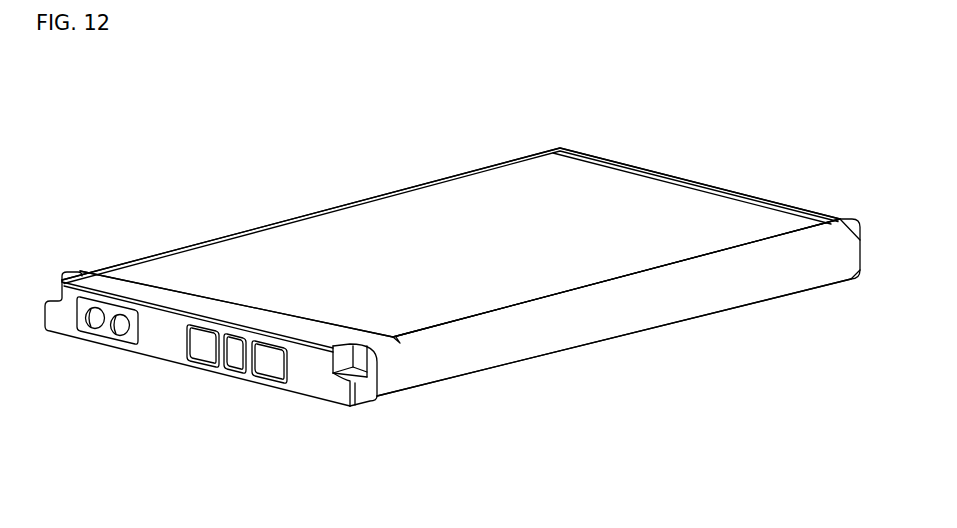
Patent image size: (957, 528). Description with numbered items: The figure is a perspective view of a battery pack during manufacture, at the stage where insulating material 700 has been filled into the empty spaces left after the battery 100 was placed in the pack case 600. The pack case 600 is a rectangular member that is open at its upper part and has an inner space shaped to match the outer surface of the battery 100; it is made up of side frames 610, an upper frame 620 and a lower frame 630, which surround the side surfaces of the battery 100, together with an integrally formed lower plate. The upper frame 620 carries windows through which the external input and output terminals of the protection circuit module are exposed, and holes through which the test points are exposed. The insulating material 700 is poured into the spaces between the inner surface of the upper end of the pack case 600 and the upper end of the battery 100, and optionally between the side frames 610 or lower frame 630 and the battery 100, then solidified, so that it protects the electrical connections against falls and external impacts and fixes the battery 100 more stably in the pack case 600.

The battery 100 is at (452, 283).
The pack case 600 is at (603, 355).
The side frame 610 is at (718, 293).
The upper frame 620 is at (293, 382).
The lower frame 630 is at (663, 165).
The insulating material 700 is at (122, 282).